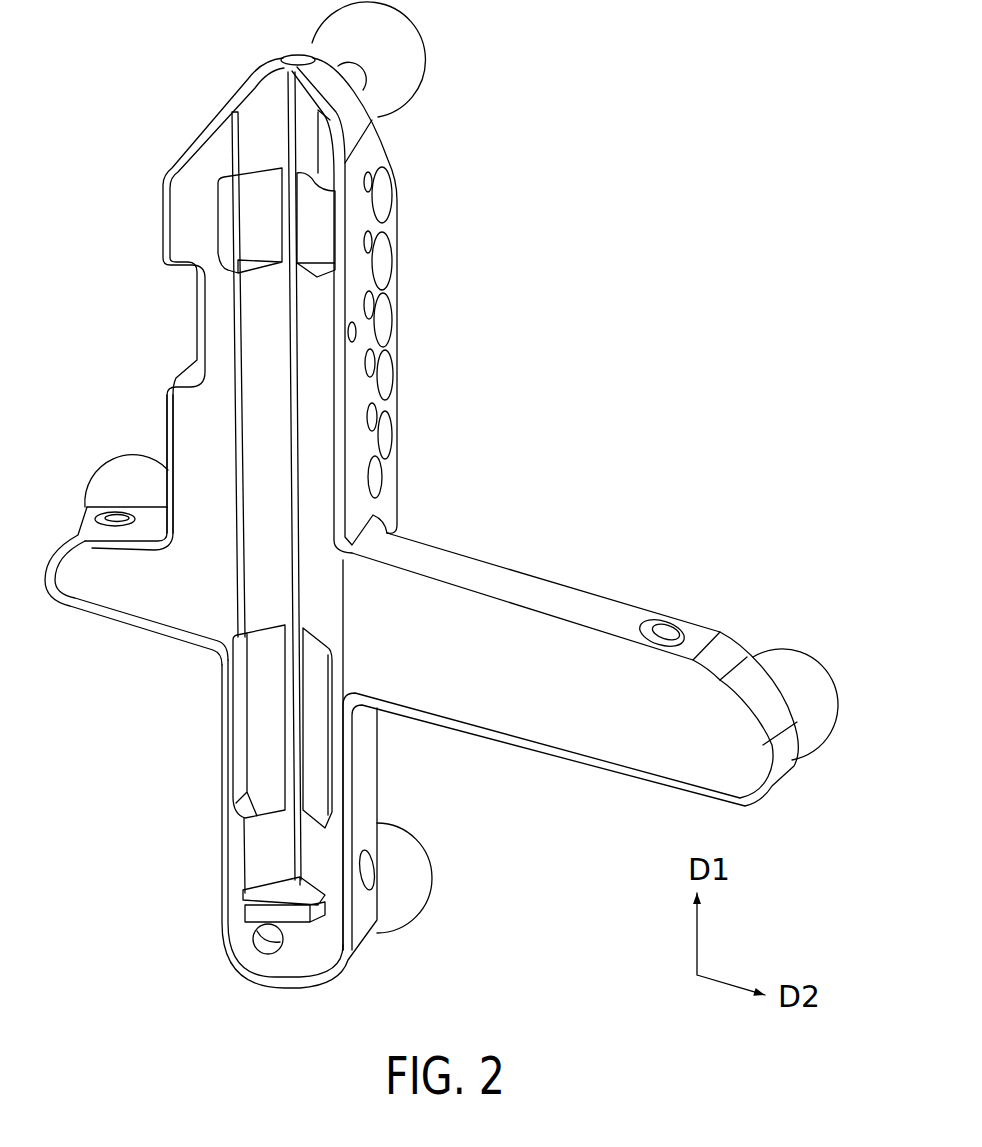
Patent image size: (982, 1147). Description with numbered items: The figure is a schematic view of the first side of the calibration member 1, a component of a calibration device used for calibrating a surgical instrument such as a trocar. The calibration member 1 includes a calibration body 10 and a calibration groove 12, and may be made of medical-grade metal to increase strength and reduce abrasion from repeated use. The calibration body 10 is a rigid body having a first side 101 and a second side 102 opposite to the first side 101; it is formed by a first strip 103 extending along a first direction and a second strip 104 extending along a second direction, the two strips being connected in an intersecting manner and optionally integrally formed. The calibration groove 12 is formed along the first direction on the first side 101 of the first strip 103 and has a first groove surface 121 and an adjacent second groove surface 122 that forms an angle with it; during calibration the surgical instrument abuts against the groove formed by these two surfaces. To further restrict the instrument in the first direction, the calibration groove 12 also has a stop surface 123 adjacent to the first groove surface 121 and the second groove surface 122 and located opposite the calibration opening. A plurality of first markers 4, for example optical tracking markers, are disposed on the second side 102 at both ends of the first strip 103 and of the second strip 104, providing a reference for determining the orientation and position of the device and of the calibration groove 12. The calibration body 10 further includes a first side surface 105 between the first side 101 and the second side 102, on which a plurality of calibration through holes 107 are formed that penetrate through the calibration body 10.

The calibration member 1 is at (461, 494).
The first markers 4 is at (413, 57).
The calibration body 10 is at (203, 721).
The calibration groove 12 is at (273, 475).
The first side 101 is at (170, 430).
The second side 102 is at (487, 560).
The first strip 103 is at (218, 763).
The second strip 104 is at (165, 610).
The first side surface 105 is at (395, 222).
The calibration through holes 107 is at (388, 265).
The first groove surface 121 is at (250, 146).
The second groove surface 122 is at (330, 173).
The stop surface 123 is at (265, 893).